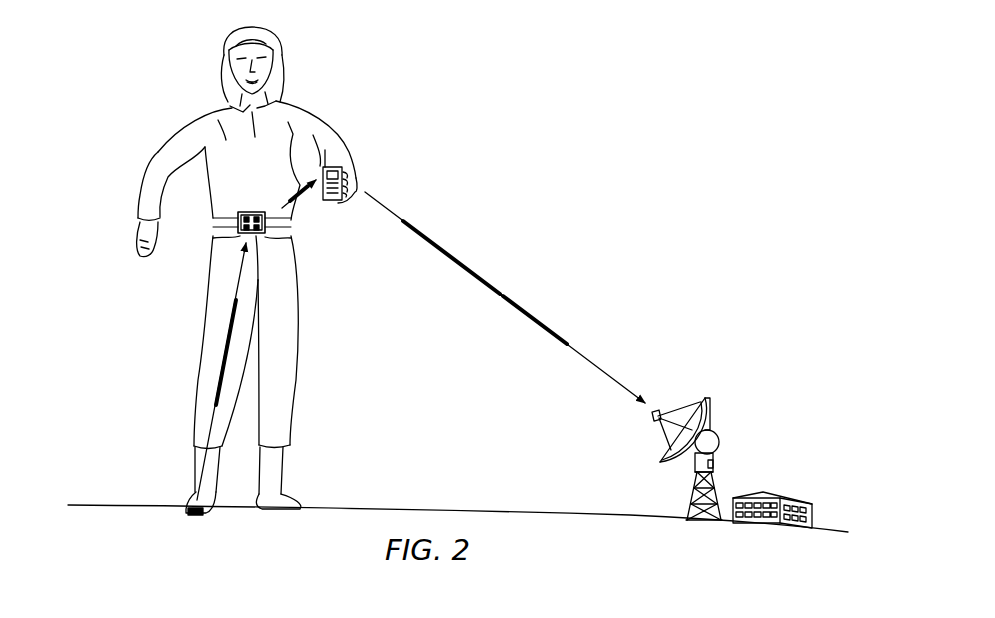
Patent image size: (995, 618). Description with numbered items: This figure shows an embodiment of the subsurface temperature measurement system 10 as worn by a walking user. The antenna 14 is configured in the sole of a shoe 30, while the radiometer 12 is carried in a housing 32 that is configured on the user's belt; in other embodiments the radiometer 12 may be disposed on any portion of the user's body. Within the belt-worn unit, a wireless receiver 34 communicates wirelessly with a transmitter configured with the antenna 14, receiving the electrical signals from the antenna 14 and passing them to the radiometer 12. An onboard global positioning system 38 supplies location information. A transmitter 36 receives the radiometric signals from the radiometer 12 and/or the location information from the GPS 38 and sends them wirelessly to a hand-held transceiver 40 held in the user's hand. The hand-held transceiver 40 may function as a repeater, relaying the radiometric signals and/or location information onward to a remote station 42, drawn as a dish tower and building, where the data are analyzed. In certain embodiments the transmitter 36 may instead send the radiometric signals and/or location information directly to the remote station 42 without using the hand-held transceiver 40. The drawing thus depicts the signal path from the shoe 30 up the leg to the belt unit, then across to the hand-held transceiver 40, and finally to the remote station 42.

The subsurface temperature measurement system 10 is at (110, 165).
The radiometer 12 is at (240, 232).
The antenna 14 is at (187, 515).
The shoe 30 is at (193, 452).
The housing 32 is at (248, 193).
The wireless receiver 34 is at (262, 233).
The transmitter 36 is at (262, 212).
The onboard global positioning system (GPS) 38 is at (238, 214).
The hand-held transceiver 40 is at (333, 201).
The remote station 42 is at (777, 440).